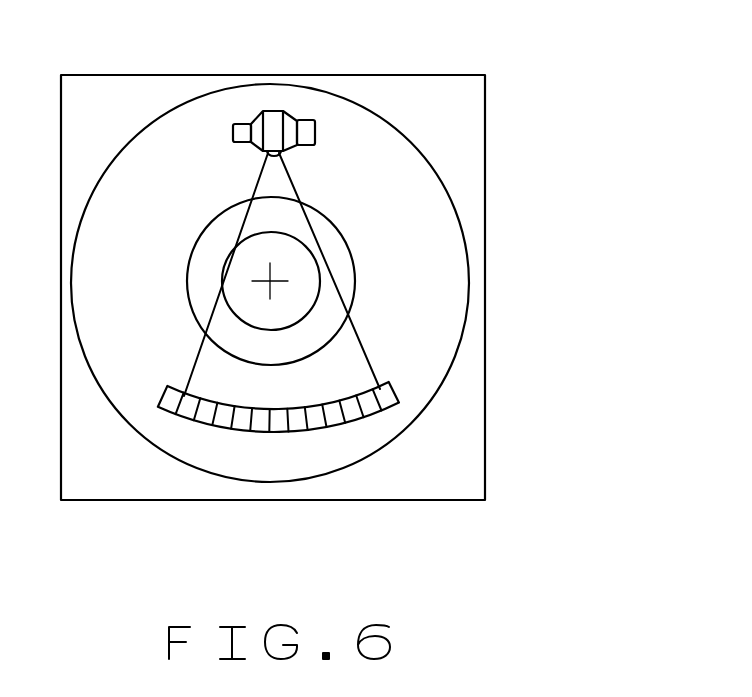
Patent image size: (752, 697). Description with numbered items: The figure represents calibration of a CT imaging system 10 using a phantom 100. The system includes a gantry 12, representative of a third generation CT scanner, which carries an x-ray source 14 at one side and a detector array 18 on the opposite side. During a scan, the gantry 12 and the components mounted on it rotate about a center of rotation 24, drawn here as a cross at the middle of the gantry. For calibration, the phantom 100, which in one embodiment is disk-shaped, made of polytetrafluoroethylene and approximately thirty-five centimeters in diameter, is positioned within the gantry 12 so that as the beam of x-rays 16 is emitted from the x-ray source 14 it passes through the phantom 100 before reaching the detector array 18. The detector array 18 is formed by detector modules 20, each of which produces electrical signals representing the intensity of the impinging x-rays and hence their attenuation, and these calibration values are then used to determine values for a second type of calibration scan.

The CT imaging system 10 is at (220, 538).
The gantry 12 is at (118, 74).
The x-ray source 14 is at (270, 120).
The beam of x-rays 16 is at (188, 372).
The detector array 18 is at (395, 392).
The detector modules 20 is at (255, 431).
The center of rotation 24 is at (276, 280).
The phantom 100 is at (212, 263).